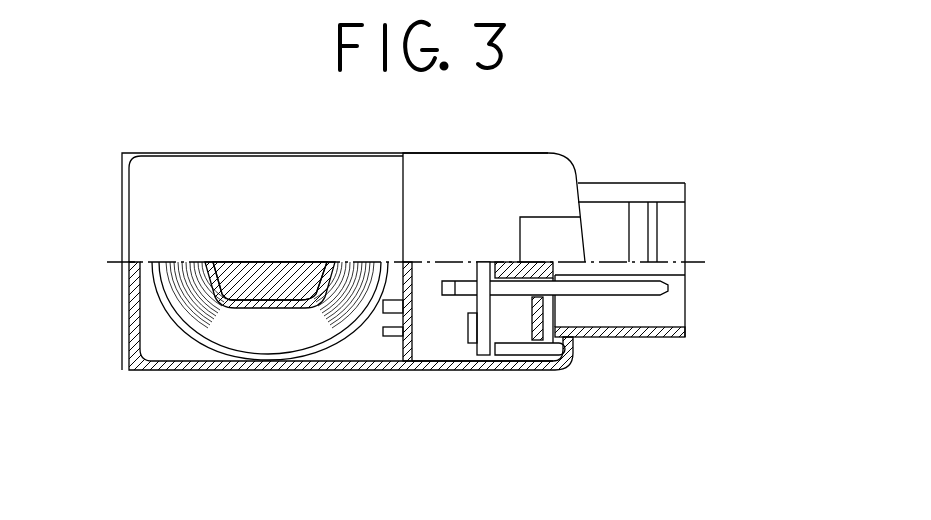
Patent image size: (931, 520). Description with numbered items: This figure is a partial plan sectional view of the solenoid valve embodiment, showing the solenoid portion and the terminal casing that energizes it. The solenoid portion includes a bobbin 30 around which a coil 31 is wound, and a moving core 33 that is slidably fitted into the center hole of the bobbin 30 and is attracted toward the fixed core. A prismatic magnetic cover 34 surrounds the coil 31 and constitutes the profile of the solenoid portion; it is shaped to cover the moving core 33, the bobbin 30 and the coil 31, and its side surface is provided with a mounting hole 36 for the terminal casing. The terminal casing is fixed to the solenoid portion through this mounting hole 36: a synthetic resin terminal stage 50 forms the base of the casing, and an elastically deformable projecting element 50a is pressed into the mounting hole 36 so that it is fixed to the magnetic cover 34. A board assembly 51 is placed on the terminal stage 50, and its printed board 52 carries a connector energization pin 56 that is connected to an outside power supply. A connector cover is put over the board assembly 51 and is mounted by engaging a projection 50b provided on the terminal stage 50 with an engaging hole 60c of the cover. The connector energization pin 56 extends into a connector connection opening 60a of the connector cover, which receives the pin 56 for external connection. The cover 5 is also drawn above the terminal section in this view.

The cover 5 is at (518, 160).
The bobbin 30 is at (245, 307).
The coil 31 is at (198, 307).
The moving core 33 is at (262, 277).
The magnetic cover 34 is at (265, 362).
The mounting hole 36 is at (406, 335).
The terminal stage 50 is at (430, 338).
The projecting element 50a is at (386, 318).
The projection 50b is at (446, 338).
The board assembly 51 is at (497, 328).
The printed board 52 is at (486, 357).
The connector energization pin 56 is at (628, 288).
The connector connection opening 60a is at (650, 324).
The engaging hole 60c is at (458, 364).